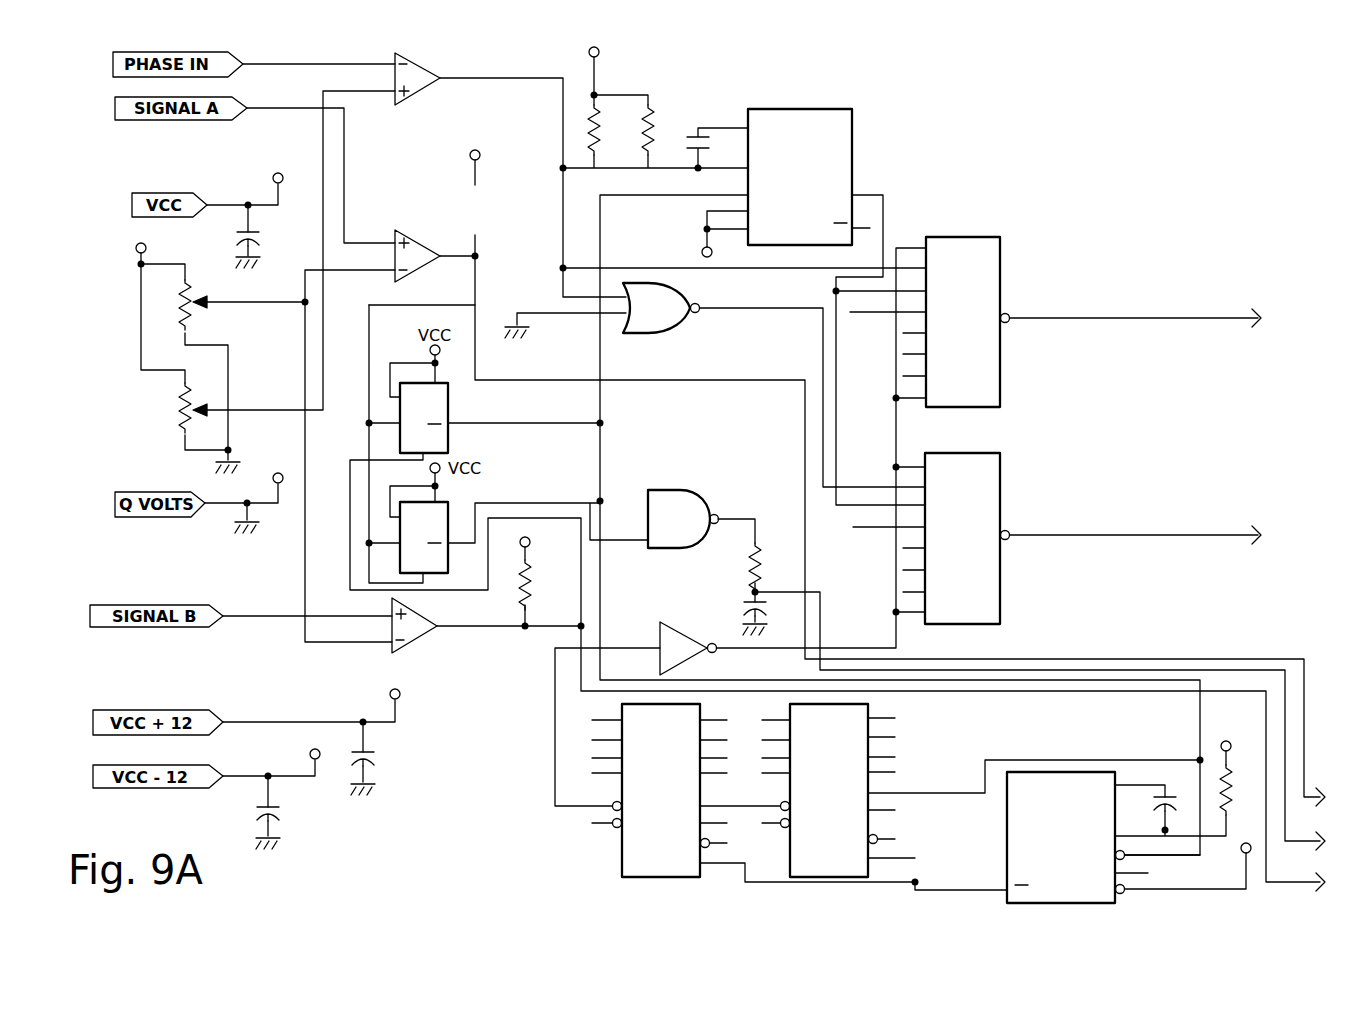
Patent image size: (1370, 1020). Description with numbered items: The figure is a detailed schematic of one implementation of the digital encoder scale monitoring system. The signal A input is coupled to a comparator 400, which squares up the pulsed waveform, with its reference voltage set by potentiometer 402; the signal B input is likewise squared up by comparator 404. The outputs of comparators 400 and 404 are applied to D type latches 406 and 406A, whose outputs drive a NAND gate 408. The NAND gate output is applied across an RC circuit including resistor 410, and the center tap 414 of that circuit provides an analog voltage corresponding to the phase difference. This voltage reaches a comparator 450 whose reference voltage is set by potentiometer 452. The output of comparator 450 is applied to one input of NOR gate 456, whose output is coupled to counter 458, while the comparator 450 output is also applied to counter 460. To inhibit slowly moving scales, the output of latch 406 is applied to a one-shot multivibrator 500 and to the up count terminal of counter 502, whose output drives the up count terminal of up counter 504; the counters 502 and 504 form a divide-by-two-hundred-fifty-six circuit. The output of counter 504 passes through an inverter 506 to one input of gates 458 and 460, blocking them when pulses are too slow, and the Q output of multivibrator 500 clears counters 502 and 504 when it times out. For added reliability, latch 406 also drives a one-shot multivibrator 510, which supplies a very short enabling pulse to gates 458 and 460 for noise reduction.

The comparator 450 is at (423, 66).
The comparator 400 is at (421, 238).
The potentiometer 402 is at (197, 283).
The potentiometer 452 is at (160, 372).
The comparator 404 is at (410, 647).
The D type latch 406 is at (450, 406).
The D type latch 406A is at (450, 510).
The NOR gate 456 is at (656, 333).
The NAND gate 408 is at (695, 492).
The resistor of RC circuit 410 is at (752, 546).
The center tap 414 is at (760, 590).
The inverter 506 is at (686, 623).
The one-shot multivibrator 510 is at (852, 114).
The counter 460 is at (1003, 257).
The counter 458 is at (1002, 475).
The up counter 504 is at (622, 868).
The counter 502 is at (870, 707).
The one-shot multivibrator 500 is at (1007, 835).